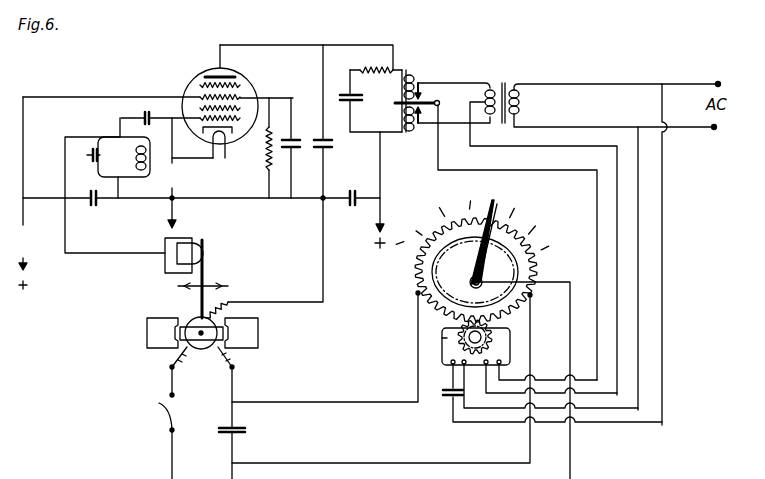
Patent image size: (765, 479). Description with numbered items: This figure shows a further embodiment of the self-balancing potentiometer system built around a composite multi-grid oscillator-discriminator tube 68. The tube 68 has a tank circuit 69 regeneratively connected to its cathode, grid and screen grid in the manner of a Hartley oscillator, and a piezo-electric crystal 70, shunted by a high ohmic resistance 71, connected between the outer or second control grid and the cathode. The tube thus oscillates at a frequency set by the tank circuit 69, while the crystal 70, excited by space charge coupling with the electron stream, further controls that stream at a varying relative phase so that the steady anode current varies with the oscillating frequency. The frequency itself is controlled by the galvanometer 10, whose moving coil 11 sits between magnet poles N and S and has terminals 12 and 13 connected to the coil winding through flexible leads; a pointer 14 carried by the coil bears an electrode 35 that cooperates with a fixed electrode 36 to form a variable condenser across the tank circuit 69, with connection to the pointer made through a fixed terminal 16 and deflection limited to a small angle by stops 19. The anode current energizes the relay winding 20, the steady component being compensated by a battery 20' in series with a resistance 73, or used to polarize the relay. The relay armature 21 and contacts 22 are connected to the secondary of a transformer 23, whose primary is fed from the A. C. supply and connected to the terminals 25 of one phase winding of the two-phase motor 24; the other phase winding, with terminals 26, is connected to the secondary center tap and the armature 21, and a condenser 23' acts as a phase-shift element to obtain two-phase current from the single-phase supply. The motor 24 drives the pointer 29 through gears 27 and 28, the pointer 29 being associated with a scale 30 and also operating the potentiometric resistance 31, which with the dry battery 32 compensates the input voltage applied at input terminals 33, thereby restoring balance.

The composite multi-grid oscillator-discriminator tube 68 is at (241, 82).
The tank circuit 69 is at (118, 157).
The piezo-electric crystal 70 is at (292, 140).
The high ohmic resistance 71 is at (267, 146).
The resistance 73 is at (363, 66).
The relay winding 20 is at (414, 89).
The battery 20' is at (364, 108).
The armature 21 is at (441, 101).
The contacts 22 is at (421, 82).
The transformer 23 is at (595, 225).
The condenser 23' is at (441, 407).
The scale 30 is at (496, 210).
The pointer 29 is at (475, 272).
The potentiometric resistance 31 is at (416, 262).
The gear 28 is at (455, 321).
The gear 27 is at (442, 333).
The two-phase electric motor 24 is at (510, 340).
The terminals 25 is at (501, 361).
The terminals 26 is at (453, 361).
The fixed electrode 36 is at (184, 238).
The electrode 35 is at (205, 254).
The pointer 14 is at (205, 271).
The stops 19 is at (220, 286).
The fixed terminal 16 is at (231, 302).
The galvanometer 10 is at (173, 322).
The moving coil 11 is at (207, 349).
The terminal 12 is at (171, 368).
The terminal 13 is at (233, 368).
The input terminals 33 is at (159, 403).
The dry battery 32 is at (242, 430).